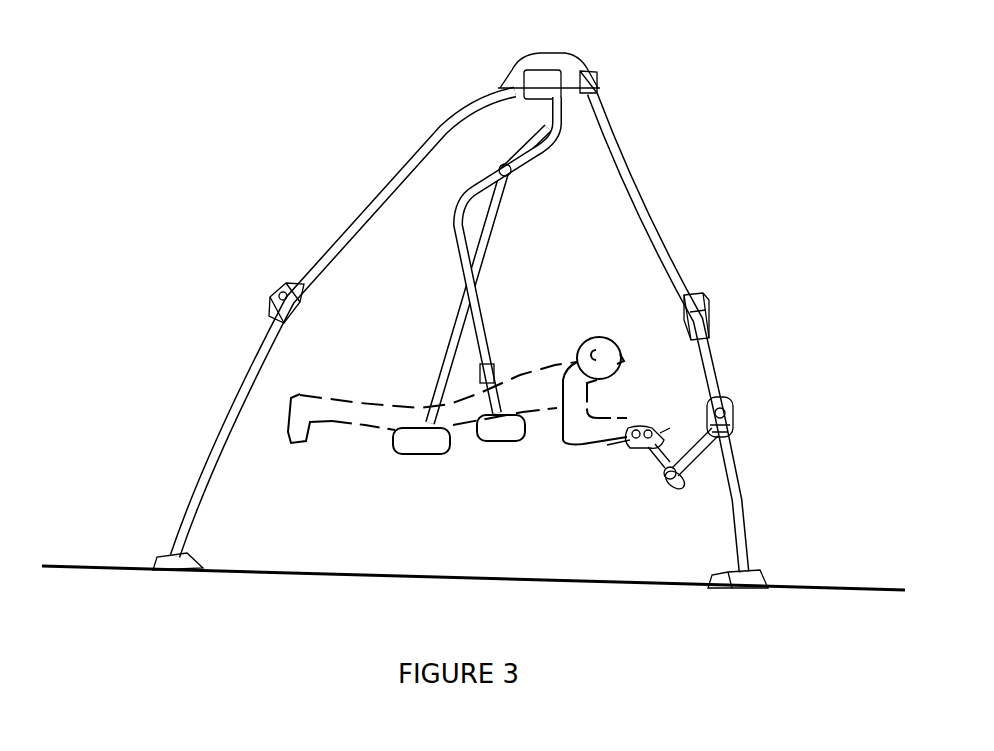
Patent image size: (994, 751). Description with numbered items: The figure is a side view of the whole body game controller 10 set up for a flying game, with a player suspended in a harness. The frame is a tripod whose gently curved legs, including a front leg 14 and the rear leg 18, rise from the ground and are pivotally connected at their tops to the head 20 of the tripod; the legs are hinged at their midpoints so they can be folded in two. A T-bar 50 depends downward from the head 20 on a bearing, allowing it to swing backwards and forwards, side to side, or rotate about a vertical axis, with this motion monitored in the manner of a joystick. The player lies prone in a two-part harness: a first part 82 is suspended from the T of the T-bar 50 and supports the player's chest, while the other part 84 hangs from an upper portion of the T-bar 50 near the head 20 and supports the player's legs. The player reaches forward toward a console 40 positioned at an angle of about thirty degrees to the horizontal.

The whole body game controller 10 is at (706, 155).
The front leg 14 is at (672, 258).
The rear leg 18 is at (346, 233).
The head 20 is at (577, 64).
The T-bar 50 is at (478, 195).
The first part of harness 82 is at (507, 442).
The second part of harness 84 is at (412, 447).
The console 40 is at (654, 464).